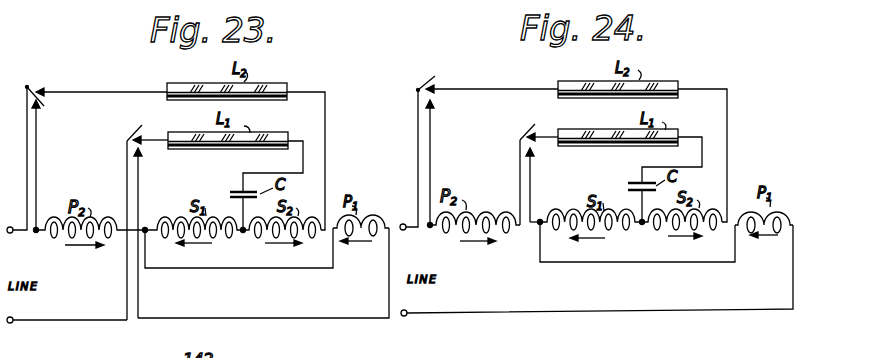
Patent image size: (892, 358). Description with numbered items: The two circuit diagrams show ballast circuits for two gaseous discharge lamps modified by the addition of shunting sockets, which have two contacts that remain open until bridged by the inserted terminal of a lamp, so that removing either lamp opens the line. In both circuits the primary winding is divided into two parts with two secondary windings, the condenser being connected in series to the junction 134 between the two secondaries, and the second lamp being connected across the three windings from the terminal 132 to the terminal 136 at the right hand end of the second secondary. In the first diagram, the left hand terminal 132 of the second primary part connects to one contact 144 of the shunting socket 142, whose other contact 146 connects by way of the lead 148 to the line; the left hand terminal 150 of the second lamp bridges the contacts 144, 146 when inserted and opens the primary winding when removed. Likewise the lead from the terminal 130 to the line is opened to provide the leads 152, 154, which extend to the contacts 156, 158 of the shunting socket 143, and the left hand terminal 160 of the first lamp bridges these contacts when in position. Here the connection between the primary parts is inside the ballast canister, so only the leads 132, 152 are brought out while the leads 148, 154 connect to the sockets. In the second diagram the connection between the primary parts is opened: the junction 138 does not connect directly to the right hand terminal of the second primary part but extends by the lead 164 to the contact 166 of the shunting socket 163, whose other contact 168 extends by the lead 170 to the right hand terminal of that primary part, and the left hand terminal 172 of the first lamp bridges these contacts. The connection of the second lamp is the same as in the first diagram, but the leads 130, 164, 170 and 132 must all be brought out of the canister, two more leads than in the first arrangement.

In FIG. 23, the terminal 130 is at (388, 281).
In FIG. 24, the terminal 130 is at (792, 268).
In FIG. 23, the left hand terminal 132 is at (37, 232).
In FIG. 24, the left hand terminal 132 is at (430, 228).
In FIG. 23, the junction 134 is at (243, 233).
In FIG. 24, the junction 134 is at (642, 226).
In FIG. 23, the terminal 136 is at (328, 142).
In FIG. 24, the terminal 136 is at (729, 160).
In FIG. 23, the junction 138 is at (146, 228).
In FIG. 24, the junction 138 is at (538, 226).
In FIG. 23, the shunting socket 142 is at (28, 80).
In FIG. 24, the shunting socket 142 is at (415, 84).
In FIG. 23, the shunting socket 143 is at (119, 149).
In FIG. 23, the contact 144 is at (38, 108).
In FIG. 24, the contact 144 is at (432, 108).
In FIG. 23, the contact 146 is at (38, 82).
In FIG. 24, the contact 146 is at (421, 86).
In FIG. 23, the lead 148 is at (11, 228).
In FIG. 24, the lead 148 is at (406, 222).
In FIG. 23, the left hand terminal 150 is at (42, 90).
In FIG. 24, the left hand terminal 150 is at (432, 88).
In FIG. 23, the lead 152 is at (140, 299).
In FIG. 23, the lead 154 is at (126, 303).
In FIG. 23, the contact 156 is at (126, 137).
In FIG. 23, the contact 158 is at (142, 155).
In FIG. 23, the left hand terminal 160 is at (143, 136).
In FIG. 24, the shunting socket 163 is at (514, 135).
In FIG. 24, the lead 164 is at (532, 208).
In FIG. 24, the contact 166 is at (534, 152).
In FIG. 24, the contact 168 is at (522, 134).
In FIG. 24, the lead 170 is at (518, 186).
In FIG. 24, the left hand terminal 172 is at (540, 135).